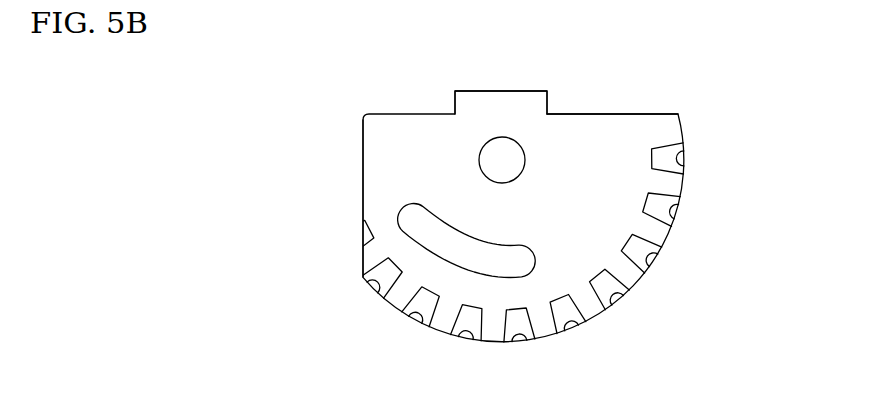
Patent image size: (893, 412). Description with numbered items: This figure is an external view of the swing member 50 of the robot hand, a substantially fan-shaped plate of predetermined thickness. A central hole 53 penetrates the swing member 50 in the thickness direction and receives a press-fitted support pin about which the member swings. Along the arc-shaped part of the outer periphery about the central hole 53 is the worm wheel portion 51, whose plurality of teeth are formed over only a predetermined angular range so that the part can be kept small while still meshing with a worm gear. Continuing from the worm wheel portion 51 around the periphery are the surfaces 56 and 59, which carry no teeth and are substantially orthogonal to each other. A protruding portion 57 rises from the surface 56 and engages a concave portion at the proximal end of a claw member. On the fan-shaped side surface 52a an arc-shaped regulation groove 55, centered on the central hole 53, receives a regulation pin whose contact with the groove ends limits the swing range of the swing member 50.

The swing member 50 is at (592, 93).
The worm wheel portion 51 is at (607, 298).
The side surface 52a is at (588, 208).
The central hole 53 is at (503, 167).
The regulation groove 55 is at (473, 256).
The surface 56 is at (622, 113).
The protruding portion 57 is at (517, 91).
The surface 59 is at (363, 181).